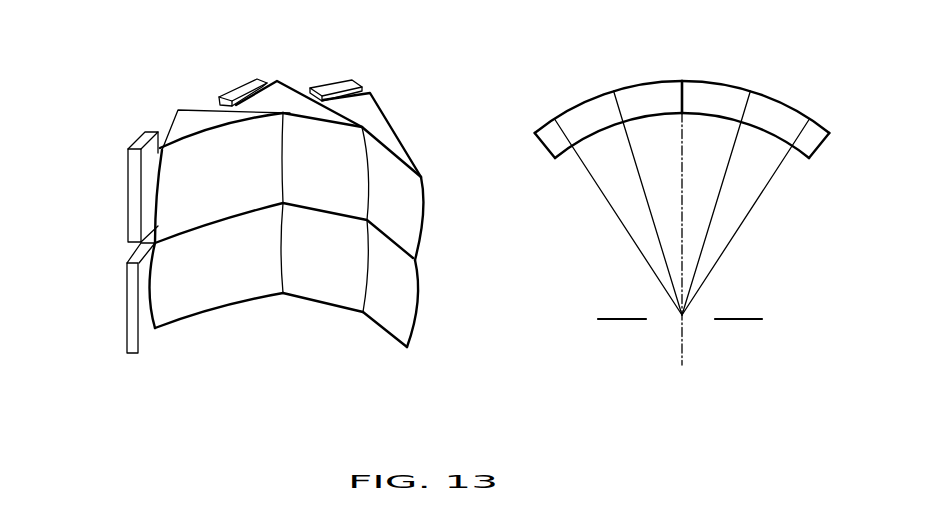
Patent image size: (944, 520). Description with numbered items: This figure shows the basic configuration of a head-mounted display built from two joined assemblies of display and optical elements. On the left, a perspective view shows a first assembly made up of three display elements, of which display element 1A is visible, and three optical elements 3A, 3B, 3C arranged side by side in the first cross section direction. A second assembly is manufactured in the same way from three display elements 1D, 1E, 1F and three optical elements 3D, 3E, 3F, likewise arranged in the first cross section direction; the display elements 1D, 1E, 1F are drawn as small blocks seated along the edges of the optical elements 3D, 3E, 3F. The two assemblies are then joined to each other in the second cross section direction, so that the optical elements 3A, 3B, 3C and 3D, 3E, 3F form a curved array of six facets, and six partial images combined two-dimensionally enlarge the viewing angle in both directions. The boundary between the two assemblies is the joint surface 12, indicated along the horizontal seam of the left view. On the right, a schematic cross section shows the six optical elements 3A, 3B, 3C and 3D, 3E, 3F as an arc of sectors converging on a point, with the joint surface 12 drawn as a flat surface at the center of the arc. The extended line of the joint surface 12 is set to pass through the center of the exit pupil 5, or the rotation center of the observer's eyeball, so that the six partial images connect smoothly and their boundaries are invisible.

The display element 1A is at (122, 316).
The display element 1D is at (128, 206).
The display element 1E is at (240, 82).
The display element 1F is at (322, 80).
The optical element 3A is at (257, 292).
The optical element 3B is at (330, 290).
The optical element 3C is at (387, 313).
The optical element 3D is at (195, 118).
The optical element 3E is at (281, 93).
The optical element 3F is at (385, 118).
The joint surface 12 is at (225, 217).
The exit pupil 5 is at (773, 108).